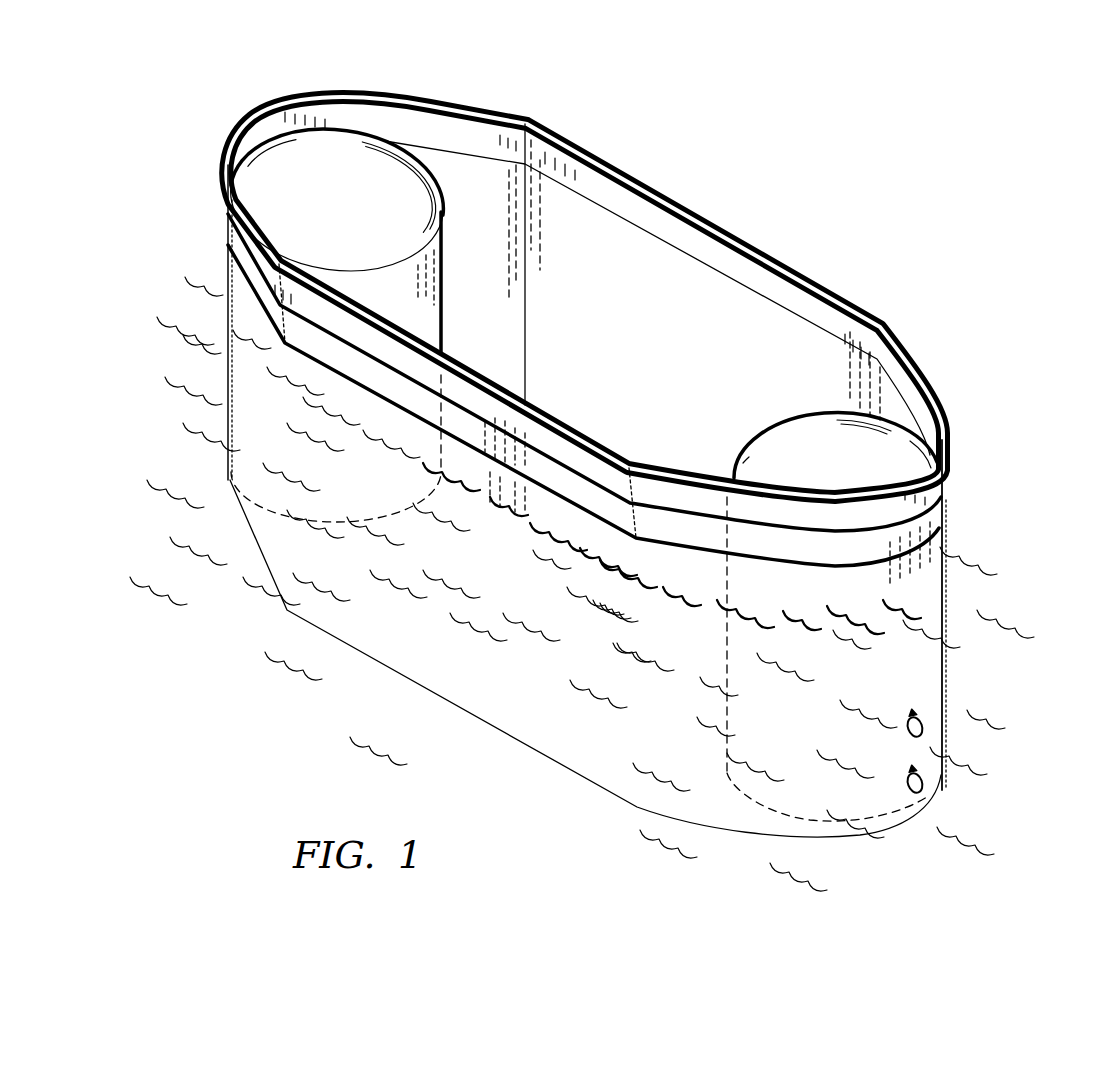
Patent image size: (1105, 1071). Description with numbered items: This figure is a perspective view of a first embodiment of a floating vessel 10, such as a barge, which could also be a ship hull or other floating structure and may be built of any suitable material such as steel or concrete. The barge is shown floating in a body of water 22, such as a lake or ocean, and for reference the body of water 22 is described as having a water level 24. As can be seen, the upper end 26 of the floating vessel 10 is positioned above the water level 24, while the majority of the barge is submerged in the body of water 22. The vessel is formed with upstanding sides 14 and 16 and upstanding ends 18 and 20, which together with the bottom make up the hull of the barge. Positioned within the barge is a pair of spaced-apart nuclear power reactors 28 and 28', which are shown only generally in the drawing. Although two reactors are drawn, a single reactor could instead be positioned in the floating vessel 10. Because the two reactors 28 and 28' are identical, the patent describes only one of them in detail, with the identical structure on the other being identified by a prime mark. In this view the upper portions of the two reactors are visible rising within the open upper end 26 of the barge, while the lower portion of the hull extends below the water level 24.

The floating vessel 10 is at (830, 247).
The upstanding side 14 is at (547, 421).
The upstanding side 16 is at (828, 320).
The upstanding end 18 is at (246, 124).
The upstanding end 20 is at (944, 487).
The body of water 22 is at (1033, 637).
The water level 24 is at (923, 587).
The upper end 26 is at (663, 199).
The nuclear power reactor 28 is at (356, 319).
The nuclear power reactor 28' is at (816, 569).